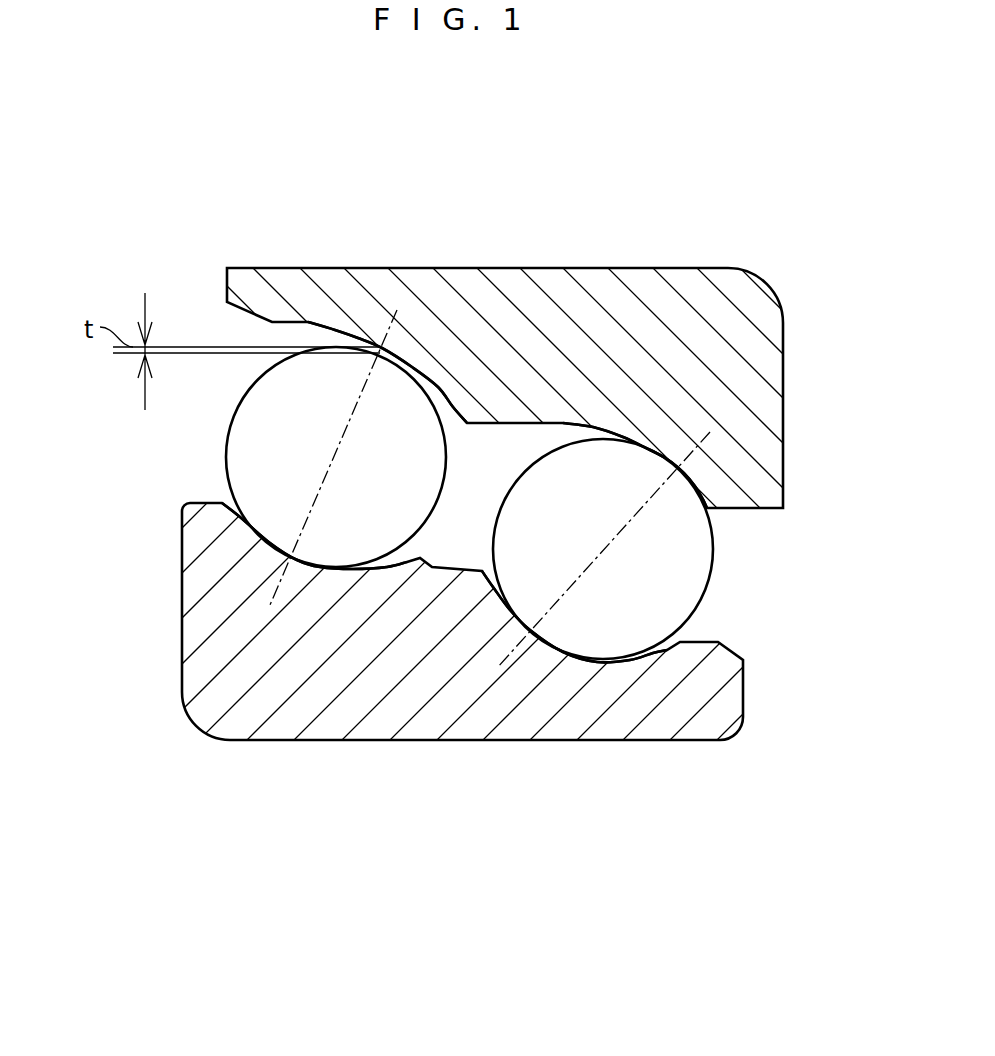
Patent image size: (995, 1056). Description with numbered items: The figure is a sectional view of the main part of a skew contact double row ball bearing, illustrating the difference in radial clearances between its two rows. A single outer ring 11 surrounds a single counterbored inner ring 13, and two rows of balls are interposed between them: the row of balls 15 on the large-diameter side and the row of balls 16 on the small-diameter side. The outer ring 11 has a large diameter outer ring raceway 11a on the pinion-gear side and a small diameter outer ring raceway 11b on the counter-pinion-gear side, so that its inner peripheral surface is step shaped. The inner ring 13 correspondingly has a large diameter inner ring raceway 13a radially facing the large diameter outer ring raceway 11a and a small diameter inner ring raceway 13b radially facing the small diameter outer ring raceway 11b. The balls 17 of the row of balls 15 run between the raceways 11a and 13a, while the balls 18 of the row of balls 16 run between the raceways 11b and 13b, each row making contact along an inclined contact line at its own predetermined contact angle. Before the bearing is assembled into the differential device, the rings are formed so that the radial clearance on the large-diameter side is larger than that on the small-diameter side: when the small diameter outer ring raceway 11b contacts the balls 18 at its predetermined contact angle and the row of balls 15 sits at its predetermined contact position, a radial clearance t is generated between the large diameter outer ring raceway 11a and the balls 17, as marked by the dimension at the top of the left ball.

The outer ring 11 is at (529, 278).
The large diameter outer ring raceway 11a is at (355, 338).
The small diameter outer ring raceway 11b is at (640, 445).
The inner ring 13 is at (457, 723).
The large diameter inner ring raceway 13a is at (313, 567).
The small diameter inner ring raceway 13b is at (583, 657).
The row of balls on the large-diameter side 15 is at (237, 457).
The row of balls on the small-diameter side 16 is at (697, 550).
The balls 17 is at (247, 465).
The balls 18 is at (670, 603).